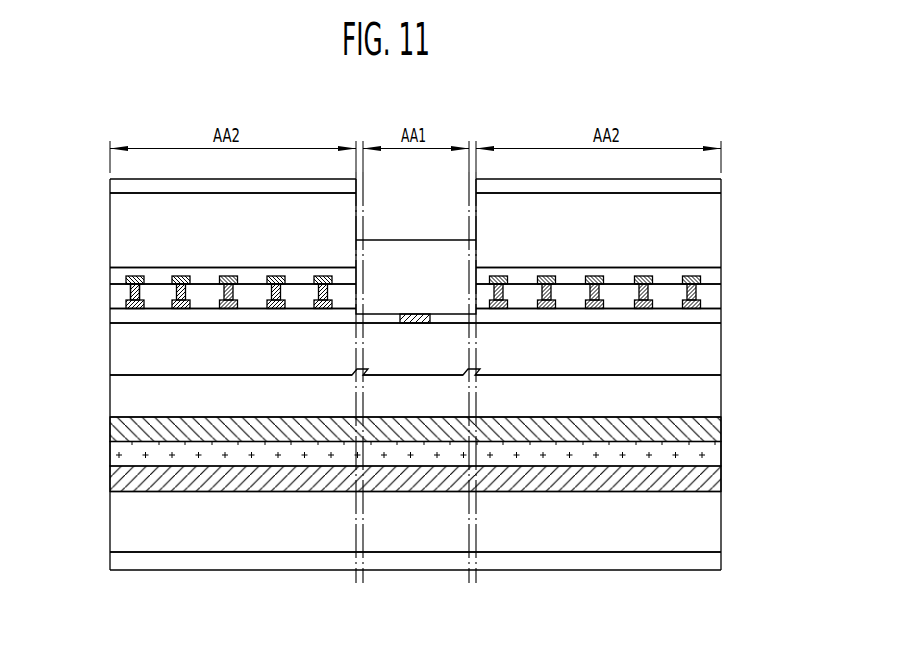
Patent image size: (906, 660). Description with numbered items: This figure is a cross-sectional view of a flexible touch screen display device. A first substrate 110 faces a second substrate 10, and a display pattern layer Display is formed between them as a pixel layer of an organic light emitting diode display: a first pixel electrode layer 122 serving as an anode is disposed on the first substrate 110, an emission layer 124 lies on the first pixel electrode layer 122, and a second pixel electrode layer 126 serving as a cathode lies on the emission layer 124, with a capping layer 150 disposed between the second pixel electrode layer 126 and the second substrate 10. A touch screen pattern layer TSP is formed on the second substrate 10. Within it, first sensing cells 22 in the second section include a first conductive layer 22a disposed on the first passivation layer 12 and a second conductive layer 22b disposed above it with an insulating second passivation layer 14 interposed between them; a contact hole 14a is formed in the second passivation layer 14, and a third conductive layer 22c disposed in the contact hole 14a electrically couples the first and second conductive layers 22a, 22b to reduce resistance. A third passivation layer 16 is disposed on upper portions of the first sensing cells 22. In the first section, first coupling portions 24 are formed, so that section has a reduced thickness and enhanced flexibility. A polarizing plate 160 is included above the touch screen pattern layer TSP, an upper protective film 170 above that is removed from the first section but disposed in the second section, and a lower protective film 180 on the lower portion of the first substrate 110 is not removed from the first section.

The second substrate 10 is at (716, 352).
The first passivation layer 12 is at (716, 317).
The second passivation layer 14 is at (716, 297).
The contact hole 14a is at (147, 293).
The third passivation layer 16 is at (716, 277).
The first sensing cells 22 is at (365, 261).
The first conductive layer 22a is at (125, 302).
The second conductive layer 22b is at (137, 277).
The third conductive layer 22c is at (130, 287).
The first coupling portions 24 is at (408, 313).
The first substrate 110 is at (716, 525).
The first pixel electrode layer 122 is at (716, 478).
The emission layer 124 is at (716, 456).
The second pixel electrode layer 126 is at (716, 432).
The capping layer 150 is at (716, 402).
The polarizing plate 160 is at (715, 232).
The upper protective film 170 is at (716, 185).
The lower protective film 180 is at (716, 563).
The touch screen pattern layer TSP is at (102, 268).
The display pattern layer Display is at (109, 419).